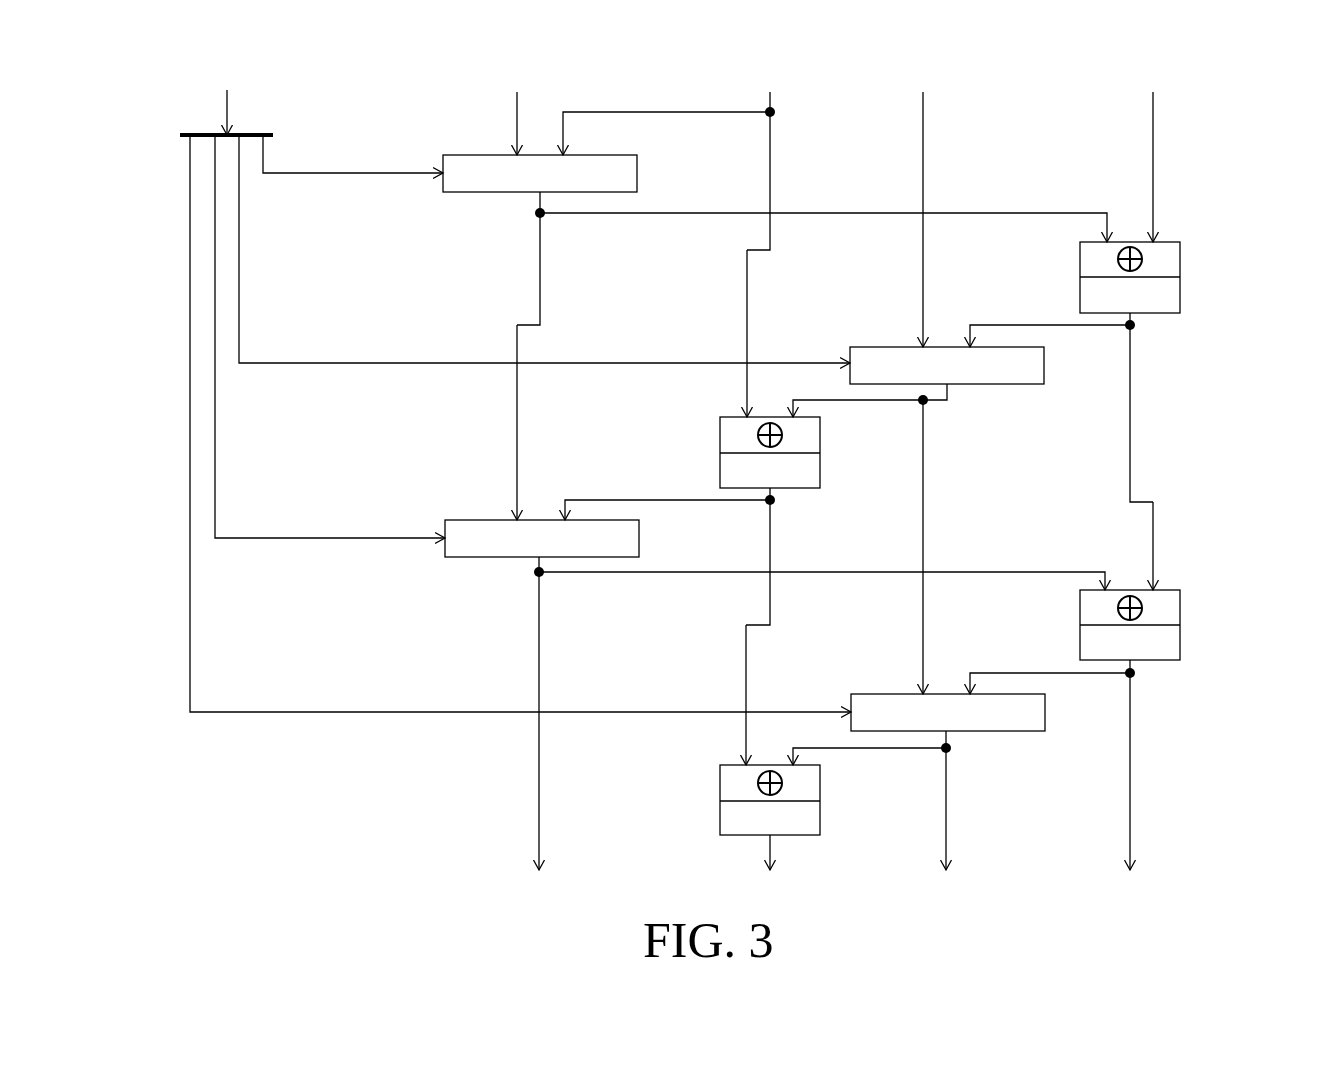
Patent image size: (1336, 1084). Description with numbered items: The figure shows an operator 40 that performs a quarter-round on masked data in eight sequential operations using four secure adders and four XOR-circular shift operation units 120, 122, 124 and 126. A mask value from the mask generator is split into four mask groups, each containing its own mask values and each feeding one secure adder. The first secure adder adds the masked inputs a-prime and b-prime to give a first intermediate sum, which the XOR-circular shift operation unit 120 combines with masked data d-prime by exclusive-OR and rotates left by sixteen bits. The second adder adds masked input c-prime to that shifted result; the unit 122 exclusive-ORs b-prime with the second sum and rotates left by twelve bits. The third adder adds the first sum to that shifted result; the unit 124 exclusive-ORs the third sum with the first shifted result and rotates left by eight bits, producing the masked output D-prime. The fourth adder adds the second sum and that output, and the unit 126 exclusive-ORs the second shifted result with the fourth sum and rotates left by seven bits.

The operator 40 is at (162, 73).
The XOR-circular shift operation unit 120 is at (1182, 274).
The XOR-circular shift operation unit 122 is at (720, 455).
The XOR-circular shift operation unit 124 is at (1182, 623).
The XOR-circular shift operation unit 126 is at (720, 802).